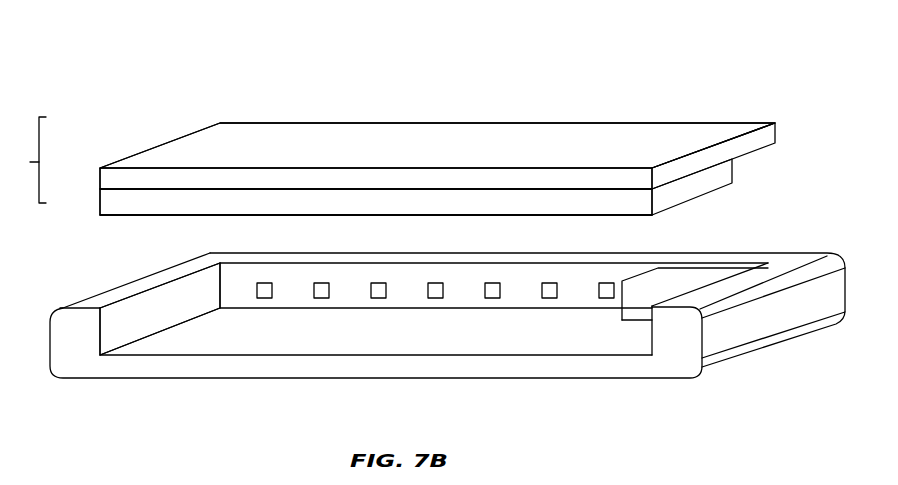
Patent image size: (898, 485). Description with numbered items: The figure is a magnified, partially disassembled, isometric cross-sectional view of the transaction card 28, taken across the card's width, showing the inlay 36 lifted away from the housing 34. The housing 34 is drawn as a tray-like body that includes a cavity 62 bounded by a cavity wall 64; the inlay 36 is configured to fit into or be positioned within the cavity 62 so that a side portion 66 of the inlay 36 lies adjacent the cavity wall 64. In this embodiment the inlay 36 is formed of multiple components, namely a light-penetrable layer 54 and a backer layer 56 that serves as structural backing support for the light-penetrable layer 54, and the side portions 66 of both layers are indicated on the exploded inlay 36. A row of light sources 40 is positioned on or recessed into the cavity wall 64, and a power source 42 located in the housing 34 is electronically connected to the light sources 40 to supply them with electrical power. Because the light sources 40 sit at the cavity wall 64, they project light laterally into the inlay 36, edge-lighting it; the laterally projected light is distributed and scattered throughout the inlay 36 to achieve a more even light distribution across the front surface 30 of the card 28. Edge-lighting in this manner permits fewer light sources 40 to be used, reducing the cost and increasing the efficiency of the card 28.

The transaction card 28 is at (398, 435).
The front surface 30 is at (413, 104).
The housing component 34 is at (63, 351).
The inlay component 36 is at (26, 160).
The light sources 40 is at (272, 291).
The power source 42 is at (688, 270).
The light-penetrable layer 54 is at (100, 171).
The backer layer 56 is at (100, 211).
The cavity 62 is at (183, 293).
The cavity wall 64 is at (128, 313).
The side portion 66 is at (234, 211).